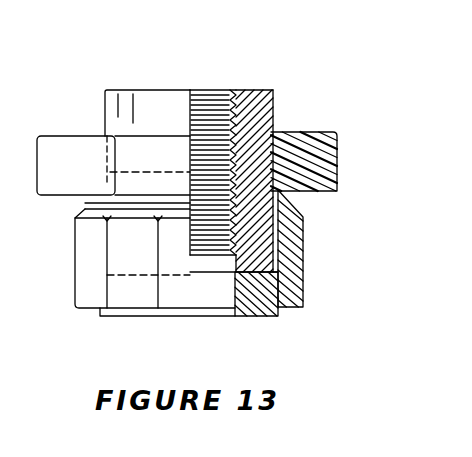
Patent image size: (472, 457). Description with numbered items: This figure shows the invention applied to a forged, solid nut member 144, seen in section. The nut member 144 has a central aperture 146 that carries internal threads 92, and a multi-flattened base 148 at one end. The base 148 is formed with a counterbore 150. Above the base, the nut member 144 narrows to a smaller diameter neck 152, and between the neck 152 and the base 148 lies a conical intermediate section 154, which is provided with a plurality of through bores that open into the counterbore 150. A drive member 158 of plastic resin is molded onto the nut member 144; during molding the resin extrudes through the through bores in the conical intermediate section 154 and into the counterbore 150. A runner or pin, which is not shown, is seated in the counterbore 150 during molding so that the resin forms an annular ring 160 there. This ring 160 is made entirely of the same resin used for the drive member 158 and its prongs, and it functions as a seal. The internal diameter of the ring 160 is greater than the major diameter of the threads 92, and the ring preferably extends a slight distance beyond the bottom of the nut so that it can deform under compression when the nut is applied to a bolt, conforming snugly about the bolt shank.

The internal threads 92 is at (190, 100).
The nut member 144 is at (271, 93).
The central aperture 146 is at (217, 89).
The multi-flattened base 148 is at (85, 264).
The counterbore 150 is at (102, 309).
The neck 152 is at (118, 117).
The conical intermediate section 154 is at (85, 203).
The drive member 158 is at (65, 153).
The annular ring 160 is at (262, 318).